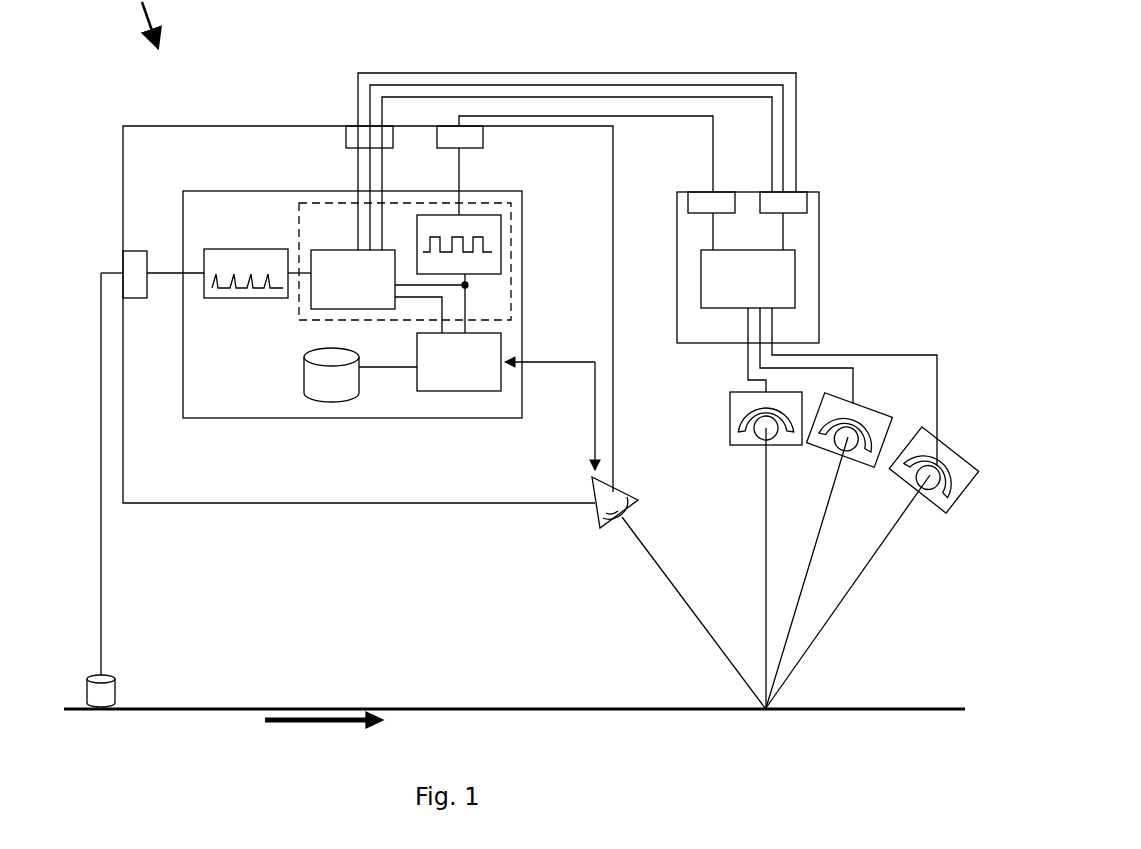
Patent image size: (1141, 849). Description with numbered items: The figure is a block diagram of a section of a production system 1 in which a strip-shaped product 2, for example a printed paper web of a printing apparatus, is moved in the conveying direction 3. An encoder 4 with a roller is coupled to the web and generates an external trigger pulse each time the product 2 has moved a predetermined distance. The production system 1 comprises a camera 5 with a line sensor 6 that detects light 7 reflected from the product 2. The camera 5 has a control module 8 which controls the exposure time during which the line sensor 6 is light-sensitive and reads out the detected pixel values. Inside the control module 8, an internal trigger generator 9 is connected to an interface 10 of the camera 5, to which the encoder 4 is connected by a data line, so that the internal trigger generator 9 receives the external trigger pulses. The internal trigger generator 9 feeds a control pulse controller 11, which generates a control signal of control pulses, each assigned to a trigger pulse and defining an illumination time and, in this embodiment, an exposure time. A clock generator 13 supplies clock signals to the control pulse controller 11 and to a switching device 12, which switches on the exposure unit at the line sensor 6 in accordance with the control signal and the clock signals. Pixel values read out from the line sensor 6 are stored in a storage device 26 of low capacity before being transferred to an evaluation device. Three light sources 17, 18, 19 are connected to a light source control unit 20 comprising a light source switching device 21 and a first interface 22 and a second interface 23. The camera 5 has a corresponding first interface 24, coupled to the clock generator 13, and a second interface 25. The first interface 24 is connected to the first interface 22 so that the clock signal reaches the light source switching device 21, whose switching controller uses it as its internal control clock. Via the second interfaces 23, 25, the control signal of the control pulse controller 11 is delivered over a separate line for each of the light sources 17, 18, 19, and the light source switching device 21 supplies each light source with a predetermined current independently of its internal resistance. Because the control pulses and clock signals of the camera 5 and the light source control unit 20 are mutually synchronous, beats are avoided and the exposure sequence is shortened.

The production system 1 is at (149, 24).
The strip-shaped product 2 is at (422, 708).
The conveying direction 3 is at (324, 725).
The encoder 4 is at (110, 690).
The camera 5 is at (250, 126).
The line sensor 6 is at (625, 490).
The light 7 is at (688, 603).
The control module 8 is at (183, 191).
The internal trigger generator 9 is at (212, 258).
The interface 10 is at (127, 262).
The control pulse controller 11 is at (330, 272).
The switching device 12 is at (447, 364).
The clock generator 13 is at (511, 203).
The light source 17 is at (730, 425).
The light source 18 is at (872, 414).
The light source 19 is at (948, 456).
The light source control unit 20 is at (708, 198).
The light source switching device 21 is at (736, 281).
The first interface 22 is at (678, 262).
The second interface 23 is at (800, 197).
The first interface 24 is at (458, 133).
The second interface 25 is at (355, 137).
The storage device 26 is at (326, 384).